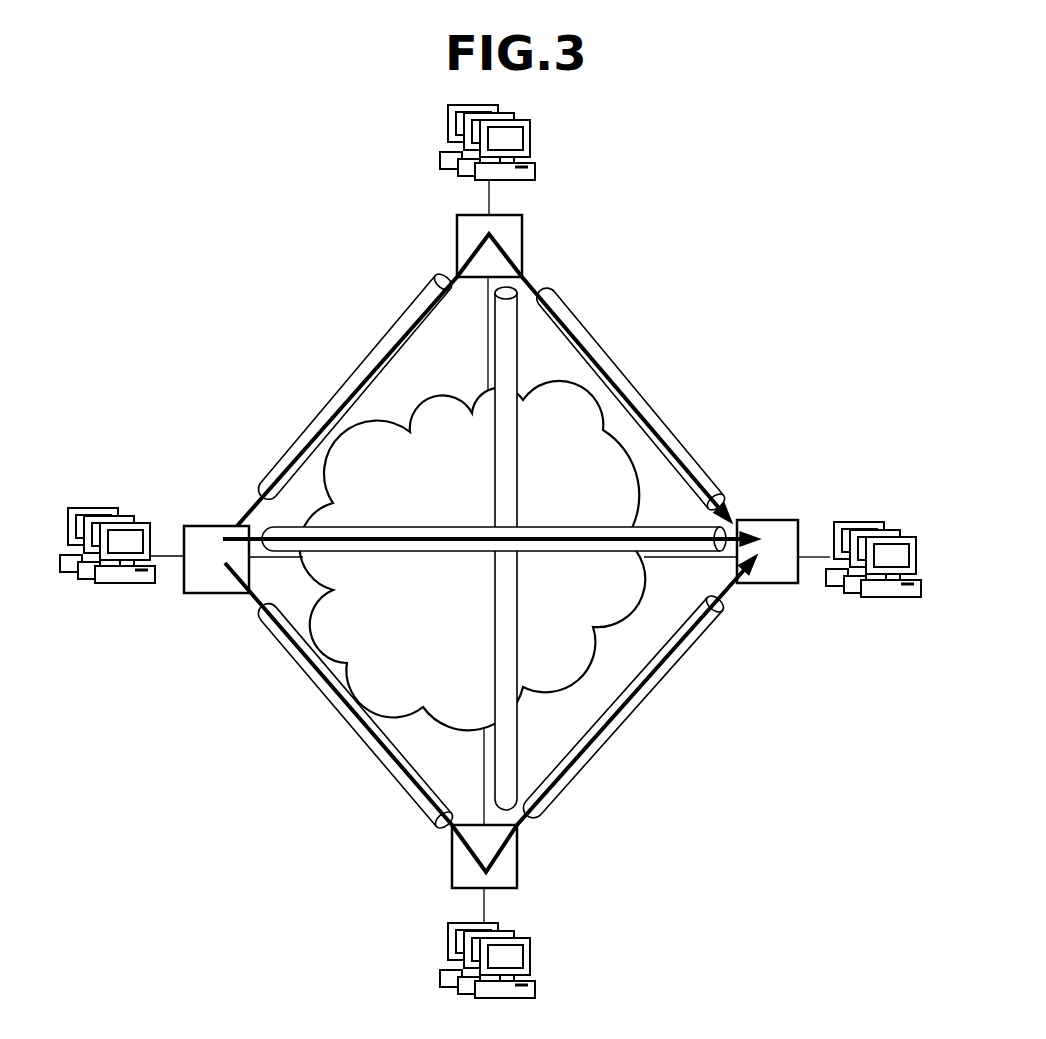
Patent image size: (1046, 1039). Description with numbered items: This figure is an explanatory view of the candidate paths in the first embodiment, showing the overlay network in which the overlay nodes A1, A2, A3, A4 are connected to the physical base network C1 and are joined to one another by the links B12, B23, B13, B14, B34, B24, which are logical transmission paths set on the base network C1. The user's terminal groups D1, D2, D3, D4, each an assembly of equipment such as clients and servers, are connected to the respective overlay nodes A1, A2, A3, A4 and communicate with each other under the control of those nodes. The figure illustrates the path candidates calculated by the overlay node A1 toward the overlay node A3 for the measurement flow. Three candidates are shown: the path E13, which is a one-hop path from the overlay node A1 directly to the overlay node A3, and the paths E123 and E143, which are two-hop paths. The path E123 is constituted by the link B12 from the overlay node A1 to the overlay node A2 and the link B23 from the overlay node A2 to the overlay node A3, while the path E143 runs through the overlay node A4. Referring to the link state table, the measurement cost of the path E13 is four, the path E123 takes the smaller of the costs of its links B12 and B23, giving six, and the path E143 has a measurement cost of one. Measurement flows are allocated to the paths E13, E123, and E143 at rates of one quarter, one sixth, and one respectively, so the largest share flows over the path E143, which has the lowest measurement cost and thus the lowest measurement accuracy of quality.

The overlay node A1 is at (212, 594).
The overlay node A2 is at (522, 226).
The overlay node A3 is at (770, 584).
The overlay node A4 is at (518, 862).
The link B12 is at (384, 338).
The link B23 is at (610, 360).
The link B13 is at (580, 526).
The link B14 is at (345, 722).
The link B34 is at (636, 704).
The link B24 is at (517, 762).
The base network C1 is at (458, 728).
The terminal group D1 is at (110, 584).
The terminal group D2 is at (537, 133).
The terminal group D3 is at (893, 598).
The terminal group D4 is at (536, 957).
The path E13 is at (416, 552).
The path E123 is at (300, 442).
The path E143 is at (293, 648).